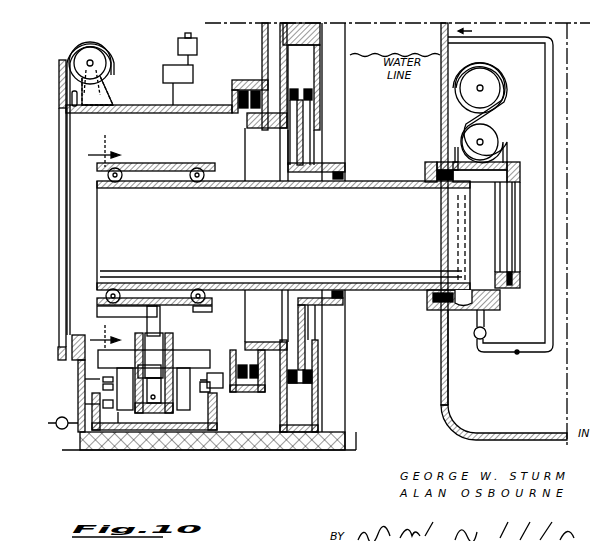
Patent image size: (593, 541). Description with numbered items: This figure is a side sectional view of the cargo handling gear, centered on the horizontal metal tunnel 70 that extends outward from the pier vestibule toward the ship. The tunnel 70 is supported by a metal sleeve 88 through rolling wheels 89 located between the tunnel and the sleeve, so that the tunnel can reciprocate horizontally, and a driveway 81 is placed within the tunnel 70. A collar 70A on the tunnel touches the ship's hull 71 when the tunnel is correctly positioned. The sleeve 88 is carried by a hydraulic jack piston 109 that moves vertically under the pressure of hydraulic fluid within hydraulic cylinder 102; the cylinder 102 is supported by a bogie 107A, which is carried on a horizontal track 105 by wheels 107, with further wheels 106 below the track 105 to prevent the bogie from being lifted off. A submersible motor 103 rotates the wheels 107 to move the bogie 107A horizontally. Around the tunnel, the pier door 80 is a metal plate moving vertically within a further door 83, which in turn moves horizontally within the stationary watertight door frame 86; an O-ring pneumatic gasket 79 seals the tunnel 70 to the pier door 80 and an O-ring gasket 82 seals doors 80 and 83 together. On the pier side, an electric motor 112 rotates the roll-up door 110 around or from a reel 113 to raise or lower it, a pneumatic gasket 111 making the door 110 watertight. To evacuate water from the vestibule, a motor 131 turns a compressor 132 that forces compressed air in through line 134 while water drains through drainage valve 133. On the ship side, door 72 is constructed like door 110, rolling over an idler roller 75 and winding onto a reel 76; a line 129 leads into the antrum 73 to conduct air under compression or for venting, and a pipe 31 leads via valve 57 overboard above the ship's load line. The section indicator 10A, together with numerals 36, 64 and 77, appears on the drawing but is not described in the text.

The door 110 is at (71, 46).
The electric motor 112 is at (112, 48).
The reel 113 is at (109, 62).
The motor 131 is at (178, 47).
The compressor 132 is at (163, 76).
The line 134 is at (168, 94).
The pneumatic gasket 111 is at (76, 110).
The section line 10A is at (100, 242).
The metal sleeve 88 is at (142, 165).
The rolling wheels 89 is at (180, 165).
The watertight door frame 86 is at (244, 80).
The door 83 is at (315, 31).
The O-ring gasket 82 is at (310, 97).
The pier door 80 is at (336, 168).
The O-ring pneumatic gasket 79 is at (345, 176).
The driveway 81 is at (275, 270).
The hydraulic jack piston 109 is at (158, 318).
The hydraulic cylinder 102 is at (172, 345).
The submersible motor 103 is at (222, 385).
The wheels 107 is at (103, 380).
The horizontal track 105 is at (105, 388).
The wheels 106 is at (105, 404).
The drainage valve 133 is at (56, 429).
The bogie 107A is at (120, 412).
The horizontal metal tunnel 70 is at (404, 180).
The tank bottom 36 is at (448, 420).
The pipe 31 is at (530, 353).
The valve 57 is at (488, 333).
The ship's hull 71 is at (448, 362).
The fitting block 64 is at (470, 310).
The reel 76 is at (488, 92).
The idler roller 75 is at (492, 142).
The door 72 is at (498, 74).
The antrum 73 is at (488, 175).
The collar 70A is at (431, 160).
The line 129 is at (446, 139).
The seal retainer 77 is at (433, 190).